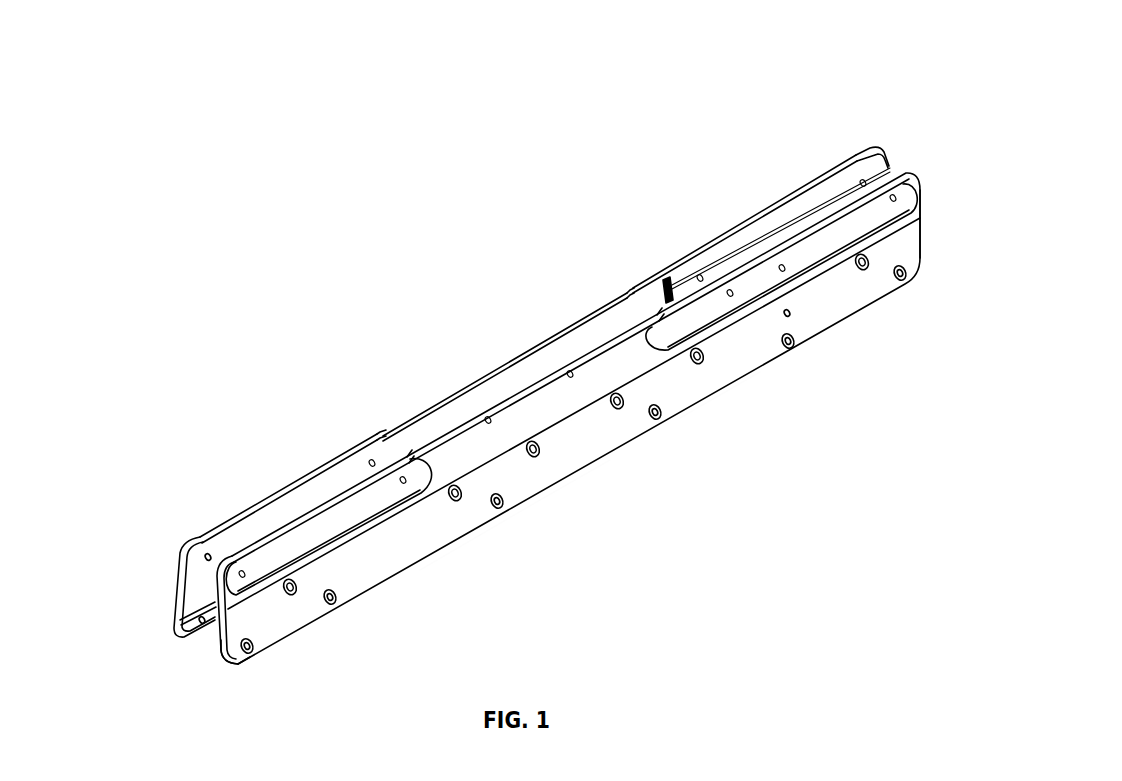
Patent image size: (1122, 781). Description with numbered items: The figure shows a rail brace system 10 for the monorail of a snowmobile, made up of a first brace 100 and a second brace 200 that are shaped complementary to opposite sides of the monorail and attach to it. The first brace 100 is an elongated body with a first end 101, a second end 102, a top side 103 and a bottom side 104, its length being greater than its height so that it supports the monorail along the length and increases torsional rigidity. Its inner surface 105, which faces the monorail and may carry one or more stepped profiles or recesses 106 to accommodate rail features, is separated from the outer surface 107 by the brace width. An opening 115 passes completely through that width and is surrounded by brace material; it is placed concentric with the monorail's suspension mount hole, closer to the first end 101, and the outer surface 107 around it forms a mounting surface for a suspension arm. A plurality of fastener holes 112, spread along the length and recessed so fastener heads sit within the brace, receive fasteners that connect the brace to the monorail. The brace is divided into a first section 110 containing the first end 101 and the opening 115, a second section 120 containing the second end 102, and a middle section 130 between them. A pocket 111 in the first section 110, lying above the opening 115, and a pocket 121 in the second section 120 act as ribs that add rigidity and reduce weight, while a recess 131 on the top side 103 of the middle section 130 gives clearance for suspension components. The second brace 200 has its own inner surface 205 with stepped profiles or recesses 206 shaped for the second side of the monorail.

The rail brace system 10 is at (229, 109).
The first brace 100 is at (581, 424).
The first end 101 is at (956, 180).
The second end 102 is at (270, 706).
The top side 103 is at (283, 498).
The bottom side 104 is at (481, 602).
The inner surface 105 is at (142, 616).
The stepped profiles or recesses 106 is at (141, 632).
The outer surface 107 is at (543, 547).
The first section 110 is at (710, 431).
The pocket 111 is at (781, 213).
The fastener holes 112 is at (573, 417).
The opening 115 is at (793, 312).
The second section 120 is at (297, 654).
The pocket 121 is at (301, 493).
The middle section 130 is at (604, 525).
The recess 131 is at (535, 365).
The second brace 200 is at (478, 434).
The inner surface 205 is at (620, 327).
The stepped profiles or recesses 206 is at (767, 235).